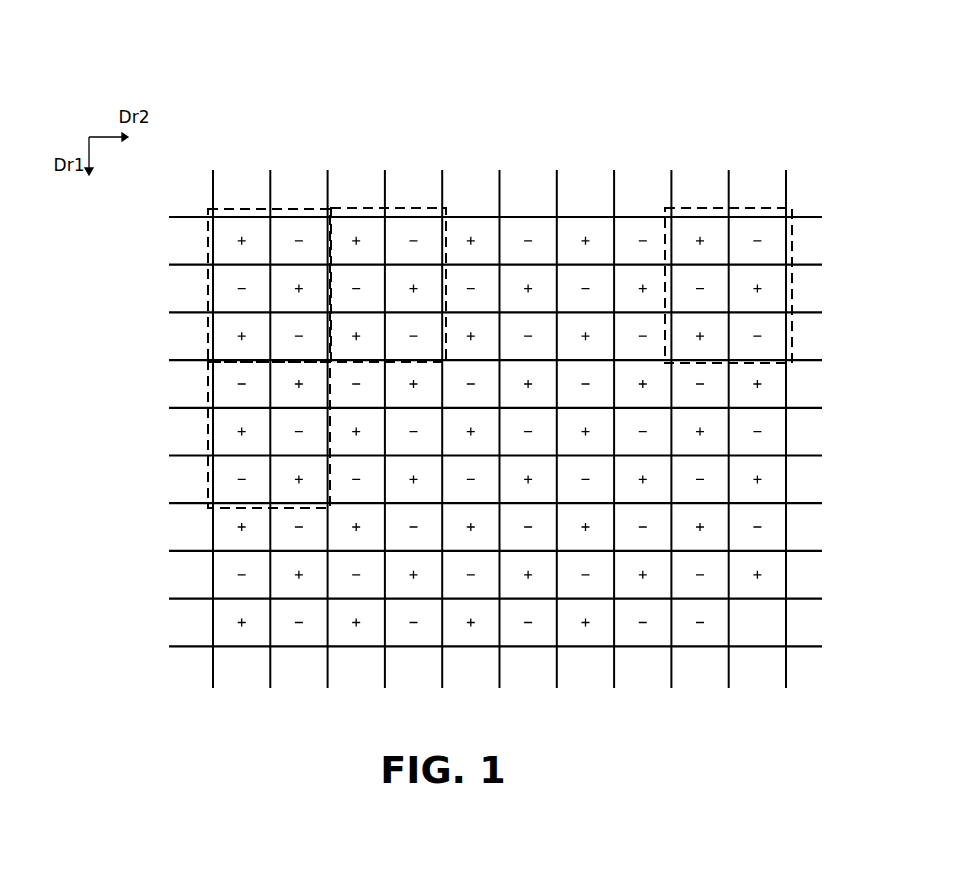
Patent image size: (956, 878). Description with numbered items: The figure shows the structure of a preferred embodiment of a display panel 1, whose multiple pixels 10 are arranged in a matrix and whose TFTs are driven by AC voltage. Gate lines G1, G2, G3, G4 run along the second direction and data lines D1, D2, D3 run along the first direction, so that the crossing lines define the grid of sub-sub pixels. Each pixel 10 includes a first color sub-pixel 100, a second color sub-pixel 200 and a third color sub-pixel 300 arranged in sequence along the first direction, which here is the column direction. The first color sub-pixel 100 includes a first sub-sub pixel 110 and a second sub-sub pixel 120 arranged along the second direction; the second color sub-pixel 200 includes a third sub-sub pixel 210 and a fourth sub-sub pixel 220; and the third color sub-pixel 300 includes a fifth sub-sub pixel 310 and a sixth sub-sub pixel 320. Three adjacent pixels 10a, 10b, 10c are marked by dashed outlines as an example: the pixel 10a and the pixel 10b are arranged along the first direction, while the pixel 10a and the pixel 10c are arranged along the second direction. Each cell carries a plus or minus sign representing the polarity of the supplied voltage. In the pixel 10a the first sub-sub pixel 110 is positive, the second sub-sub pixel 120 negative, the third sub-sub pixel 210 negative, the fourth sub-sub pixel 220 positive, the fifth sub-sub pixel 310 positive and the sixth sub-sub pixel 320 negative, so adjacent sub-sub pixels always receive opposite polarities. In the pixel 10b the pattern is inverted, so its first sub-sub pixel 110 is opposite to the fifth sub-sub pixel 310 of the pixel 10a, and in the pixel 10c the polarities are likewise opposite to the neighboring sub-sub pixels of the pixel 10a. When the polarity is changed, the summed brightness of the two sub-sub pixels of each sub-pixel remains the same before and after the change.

The display panel 1 is at (435, 33).
The pixel 10 is at (692, 207).
The pixel 10a is at (92, 238).
The pixel 10b is at (102, 388).
The pixel 10c is at (446, 208).
The first color sub-pixel 100 is at (138, 223).
The first sub-sub pixel 110 is at (245, 376).
The second sub-sub pixel 120 is at (285, 257).
The second color sub-pixel 200 is at (135, 272).
The third sub-sub pixel 210 is at (235, 273).
The fourth sub-sub pixel 220 is at (280, 298).
The third color sub-pixel 300 is at (143, 317).
The fifth sub-sub pixel 310 is at (250, 320).
The sixth sub-sub pixel 320 is at (293, 345).
The first gate line G1 is at (511, 218).
The second gate line G2 is at (511, 266).
The third gate line G3 is at (511, 314).
The fourth gate line G4 is at (511, 362).
The first data line D1 is at (213, 445).
The second data line D2 is at (271, 445).
The third data line D3 is at (328, 445).